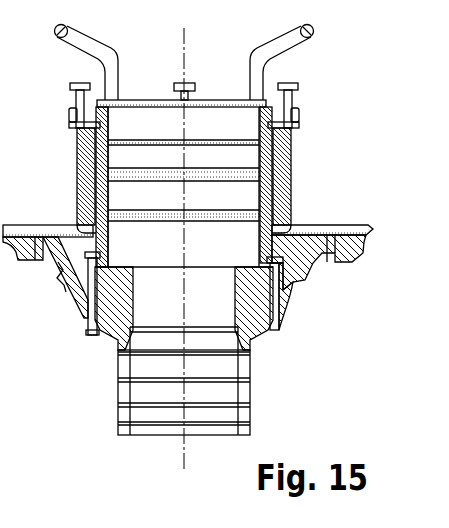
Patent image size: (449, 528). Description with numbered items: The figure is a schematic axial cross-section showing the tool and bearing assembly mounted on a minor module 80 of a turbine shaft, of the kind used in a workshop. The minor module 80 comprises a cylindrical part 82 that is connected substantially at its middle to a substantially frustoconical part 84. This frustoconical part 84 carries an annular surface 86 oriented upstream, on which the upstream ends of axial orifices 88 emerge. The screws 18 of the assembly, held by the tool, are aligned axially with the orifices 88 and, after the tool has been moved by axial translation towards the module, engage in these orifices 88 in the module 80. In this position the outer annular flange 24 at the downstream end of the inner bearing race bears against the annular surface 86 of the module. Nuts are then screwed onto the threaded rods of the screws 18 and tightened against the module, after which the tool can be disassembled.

The screws 18 is at (84, 323).
The outer annular flange 24 is at (286, 267).
The minor module 80 is at (8, 216).
The cylindrical part 82 is at (251, 392).
The frustoconical part 84 is at (55, 263).
The annular surface 86 is at (291, 286).
The axial orifices 88 is at (284, 298).